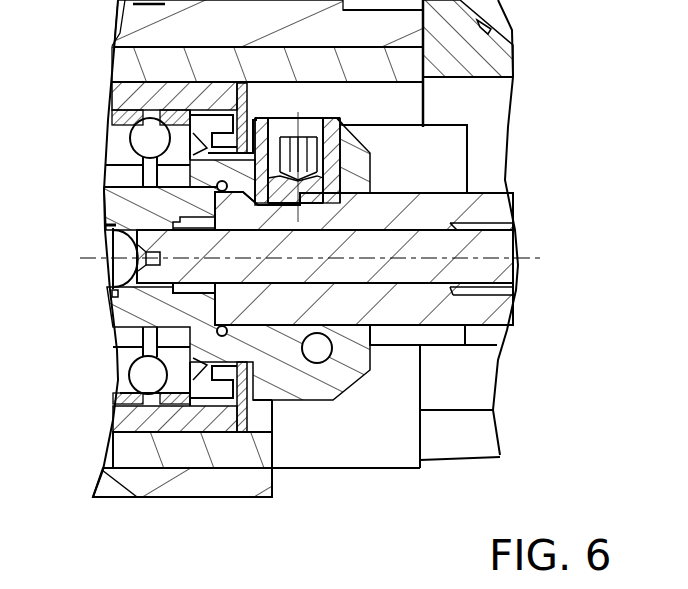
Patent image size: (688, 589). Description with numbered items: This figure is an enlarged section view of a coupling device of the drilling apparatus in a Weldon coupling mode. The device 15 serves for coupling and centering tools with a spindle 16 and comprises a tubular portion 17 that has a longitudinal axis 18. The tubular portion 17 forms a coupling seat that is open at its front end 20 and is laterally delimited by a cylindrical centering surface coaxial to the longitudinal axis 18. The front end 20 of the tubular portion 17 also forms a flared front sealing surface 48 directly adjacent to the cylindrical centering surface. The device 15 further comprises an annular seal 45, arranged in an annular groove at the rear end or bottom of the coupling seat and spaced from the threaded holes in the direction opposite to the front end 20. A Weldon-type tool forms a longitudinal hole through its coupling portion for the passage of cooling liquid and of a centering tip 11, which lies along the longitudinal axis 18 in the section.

The centering tip 11 is at (490, 248).
The device for coupling and centering tools 15 is at (403, 170).
The spindle 16 is at (173, 297).
The tubular portion 17 is at (343, 372).
The longitudinal axis 18 is at (533, 258).
The front end 20 is at (378, 348).
The annular seal 45 is at (250, 362).
The flared front sealing surface 48 is at (365, 330).